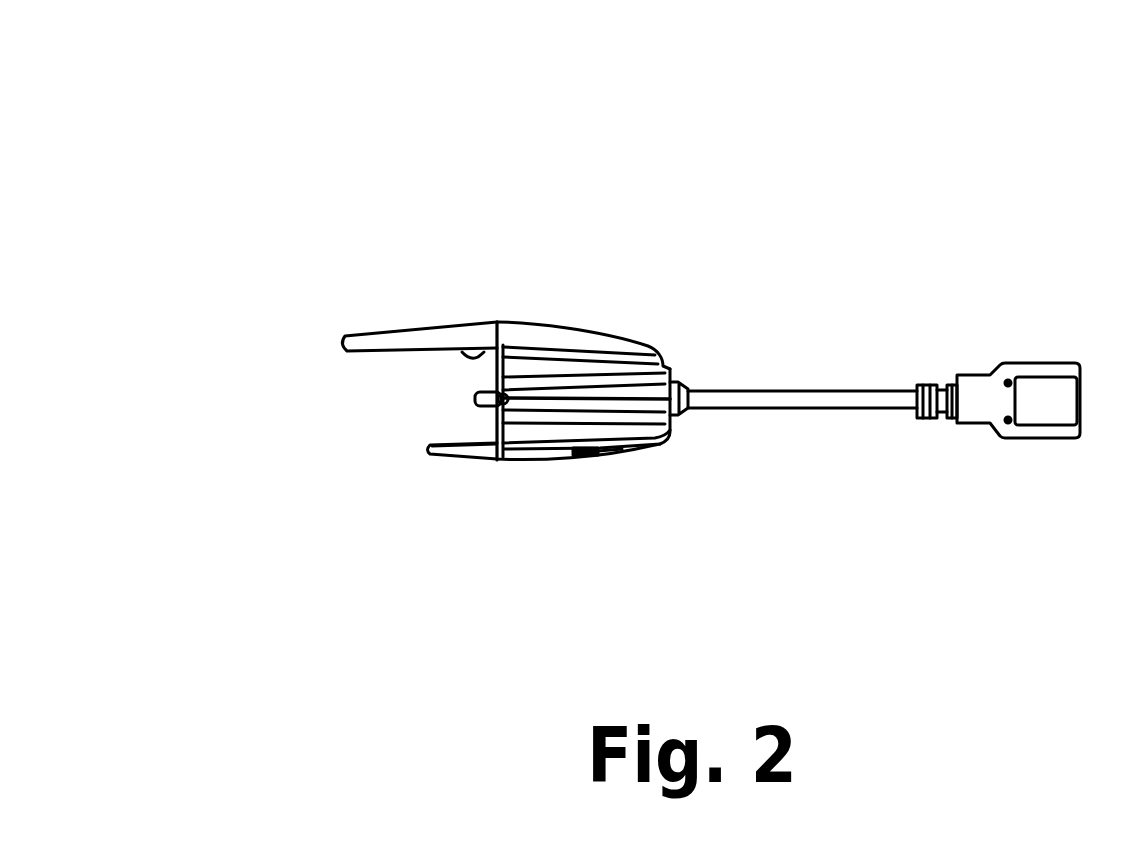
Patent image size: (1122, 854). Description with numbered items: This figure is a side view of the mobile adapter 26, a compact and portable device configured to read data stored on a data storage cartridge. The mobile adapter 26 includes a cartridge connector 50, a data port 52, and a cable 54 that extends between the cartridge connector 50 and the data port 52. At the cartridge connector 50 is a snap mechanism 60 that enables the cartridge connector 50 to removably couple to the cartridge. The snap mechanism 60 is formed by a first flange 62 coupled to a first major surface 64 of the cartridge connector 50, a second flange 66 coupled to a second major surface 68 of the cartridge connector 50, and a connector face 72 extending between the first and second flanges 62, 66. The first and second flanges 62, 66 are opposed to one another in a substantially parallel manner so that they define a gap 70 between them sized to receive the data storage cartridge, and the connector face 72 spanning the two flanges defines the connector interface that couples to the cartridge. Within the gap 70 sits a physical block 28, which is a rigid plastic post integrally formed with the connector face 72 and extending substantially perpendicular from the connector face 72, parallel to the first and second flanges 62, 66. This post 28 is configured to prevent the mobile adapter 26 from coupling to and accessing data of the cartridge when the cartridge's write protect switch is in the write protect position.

The mobile adapter 26 is at (783, 225).
The physical block 28 is at (473, 398).
The cartridge connector 50 is at (575, 480).
The data port 52 is at (1025, 463).
The cable 54 is at (823, 408).
The snap mechanism 60 is at (340, 387).
The first flange 62 is at (448, 336).
The first major surface 64 is at (575, 338).
The second flange 66 is at (487, 460).
The second major surface 68 is at (622, 452).
The gap 70 is at (433, 423).
The connector face 72 is at (497, 365).